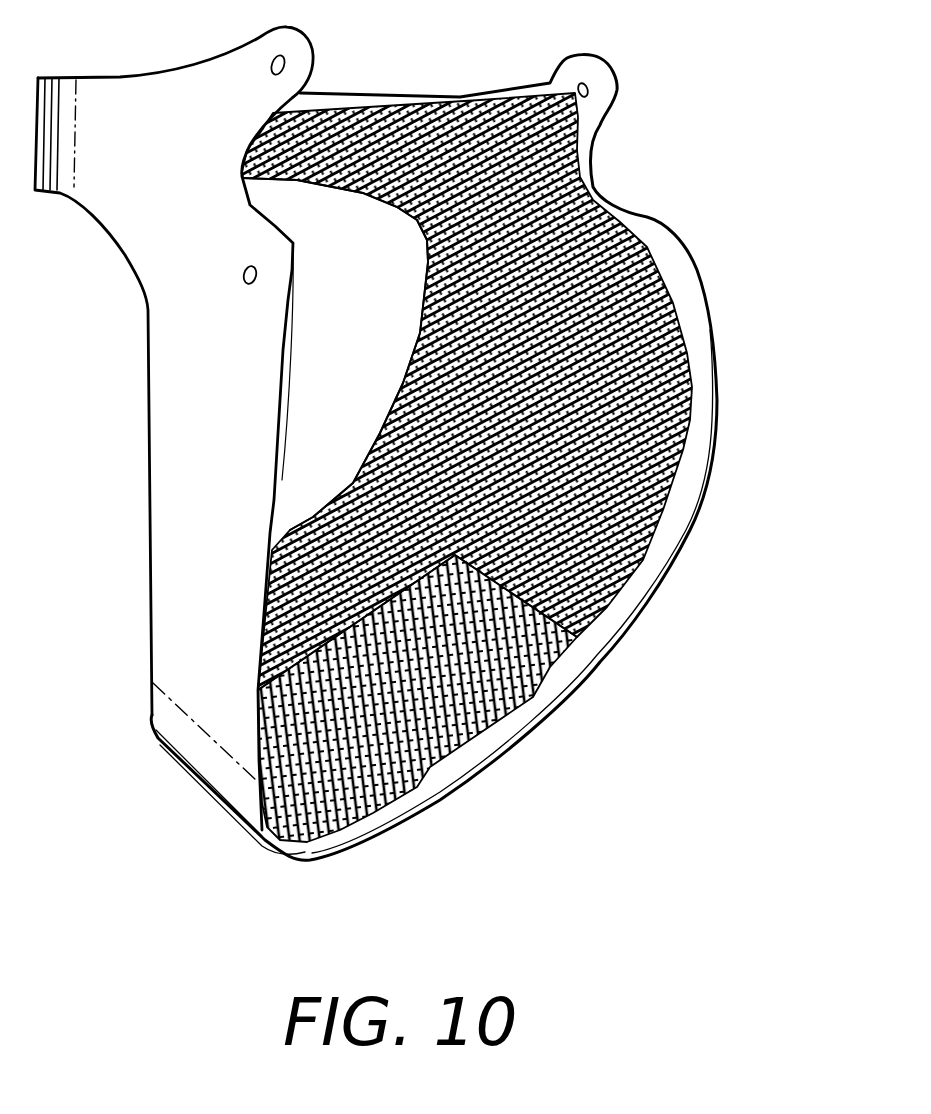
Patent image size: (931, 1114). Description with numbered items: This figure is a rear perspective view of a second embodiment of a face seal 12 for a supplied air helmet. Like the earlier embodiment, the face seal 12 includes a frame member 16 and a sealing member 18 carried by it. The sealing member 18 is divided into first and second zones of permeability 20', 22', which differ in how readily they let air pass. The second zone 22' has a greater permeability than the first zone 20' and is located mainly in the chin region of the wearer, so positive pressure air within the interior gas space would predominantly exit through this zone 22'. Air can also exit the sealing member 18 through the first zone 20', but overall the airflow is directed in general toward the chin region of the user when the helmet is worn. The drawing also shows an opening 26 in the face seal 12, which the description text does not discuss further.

The protective shell 12 is at (745, 223).
The outer rim edge 16 is at (563, 707).
The fabric layer region 18 is at (507, 153).
The first woven material layer 20' is at (547, 400).
The second woven material layer 22' is at (420, 723).
The opening 26 is at (428, 248).